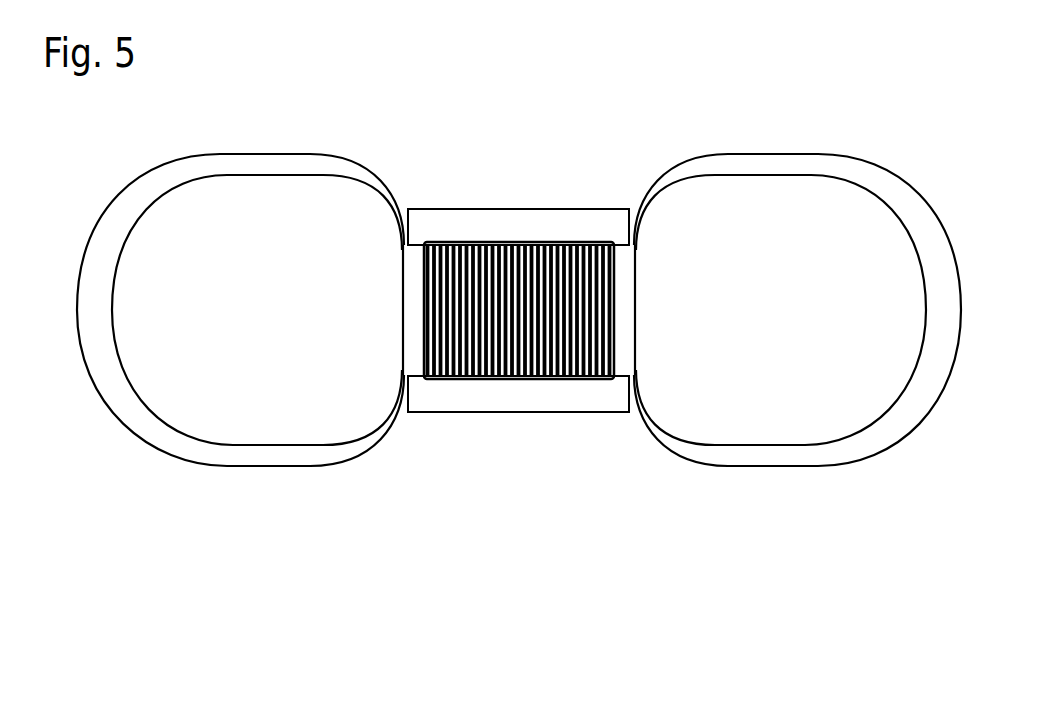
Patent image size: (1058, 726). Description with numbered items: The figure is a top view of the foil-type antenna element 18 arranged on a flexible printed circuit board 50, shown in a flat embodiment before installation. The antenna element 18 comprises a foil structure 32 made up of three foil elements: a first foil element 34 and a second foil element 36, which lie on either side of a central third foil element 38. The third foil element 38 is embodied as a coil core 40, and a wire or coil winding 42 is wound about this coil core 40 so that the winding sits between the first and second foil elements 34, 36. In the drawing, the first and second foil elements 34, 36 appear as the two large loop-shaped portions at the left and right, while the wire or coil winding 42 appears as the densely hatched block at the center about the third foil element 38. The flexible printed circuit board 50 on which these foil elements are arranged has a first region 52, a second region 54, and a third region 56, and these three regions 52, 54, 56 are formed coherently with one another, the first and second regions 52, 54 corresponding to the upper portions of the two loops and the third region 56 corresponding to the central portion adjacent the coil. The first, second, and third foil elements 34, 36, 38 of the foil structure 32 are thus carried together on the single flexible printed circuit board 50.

The antenna element 18 is at (223, 294).
The foil structure 32 is at (132, 210).
The first foil element 34 is at (270, 428).
The second foil element 36 is at (760, 427).
The third foil element 38 is at (515, 366).
The coil core 40 is at (415, 353).
The wire or coil winding 42 is at (540, 356).
The flexible printed circuit board 50 is at (149, 527).
The first region 52 is at (276, 162).
The second region 54 is at (760, 163).
The third region 56 is at (513, 227).